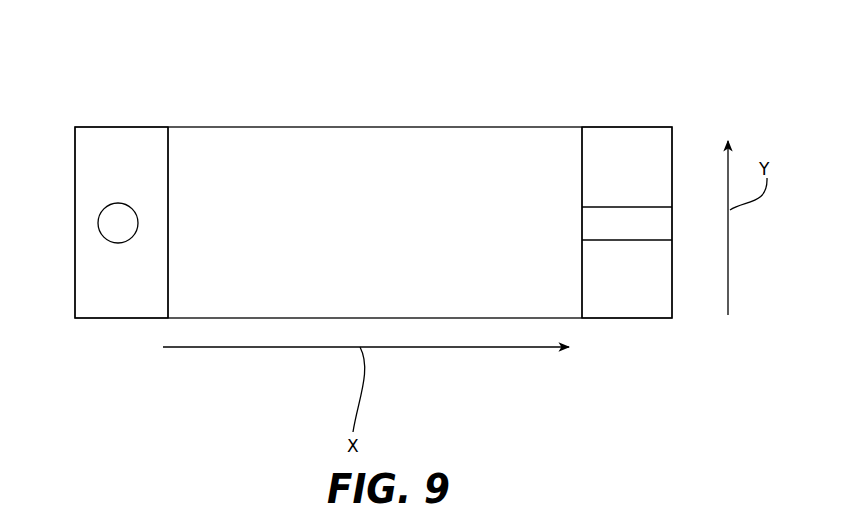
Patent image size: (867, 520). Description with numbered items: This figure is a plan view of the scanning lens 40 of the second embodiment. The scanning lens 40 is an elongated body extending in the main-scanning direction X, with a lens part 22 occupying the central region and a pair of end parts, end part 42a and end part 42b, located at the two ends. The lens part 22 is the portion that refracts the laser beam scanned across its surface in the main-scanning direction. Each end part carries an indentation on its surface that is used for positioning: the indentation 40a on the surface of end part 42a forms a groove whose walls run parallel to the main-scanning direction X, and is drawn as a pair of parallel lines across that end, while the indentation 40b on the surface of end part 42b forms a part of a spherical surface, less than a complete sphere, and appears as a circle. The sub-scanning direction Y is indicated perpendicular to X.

The scanning lens 40 is at (134, 359).
The lens part 22 is at (400, 150).
The end part 42a is at (639, 112).
The end part 42b is at (121, 94).
The indentation 40a is at (642, 222).
The indentation 40b is at (114, 224).